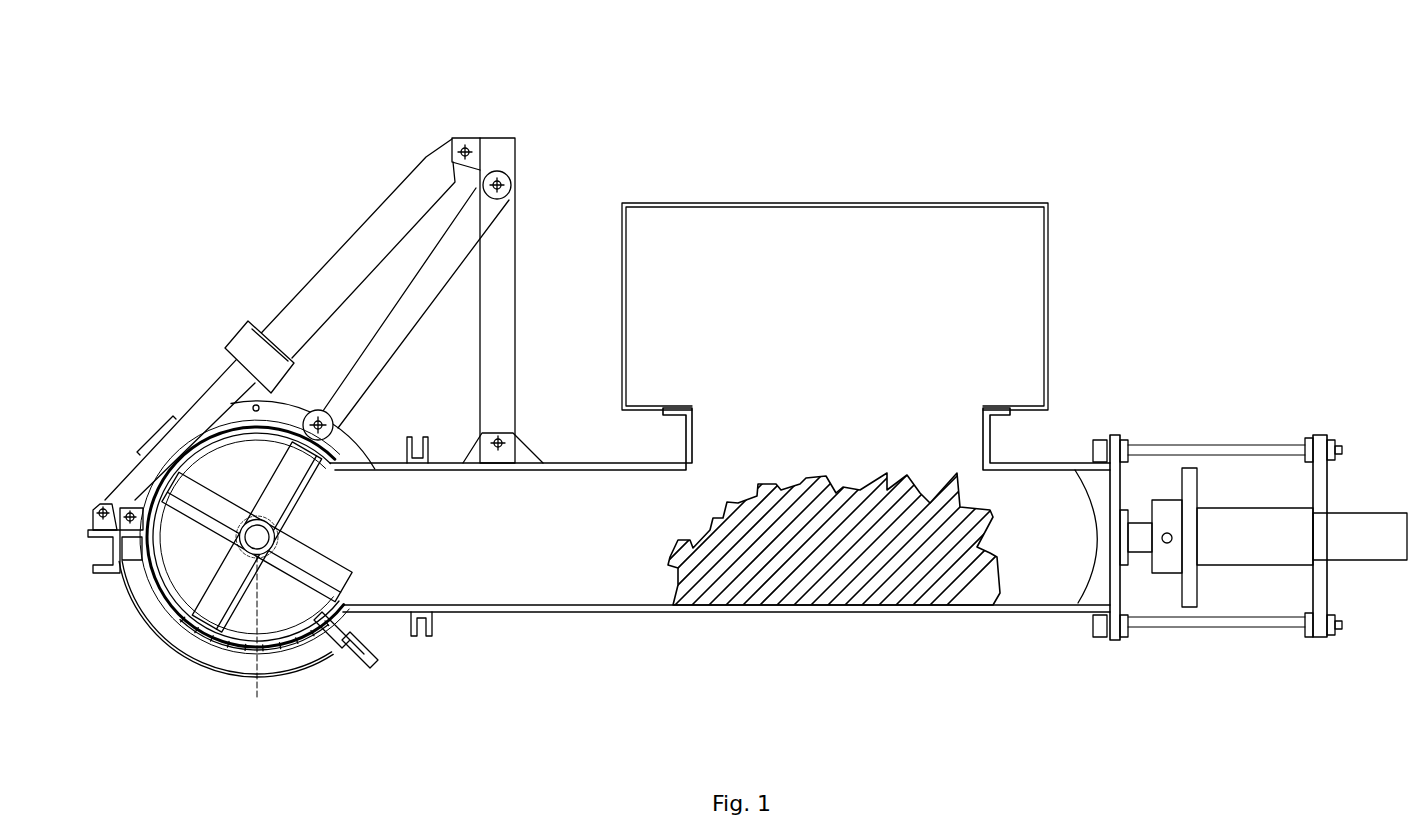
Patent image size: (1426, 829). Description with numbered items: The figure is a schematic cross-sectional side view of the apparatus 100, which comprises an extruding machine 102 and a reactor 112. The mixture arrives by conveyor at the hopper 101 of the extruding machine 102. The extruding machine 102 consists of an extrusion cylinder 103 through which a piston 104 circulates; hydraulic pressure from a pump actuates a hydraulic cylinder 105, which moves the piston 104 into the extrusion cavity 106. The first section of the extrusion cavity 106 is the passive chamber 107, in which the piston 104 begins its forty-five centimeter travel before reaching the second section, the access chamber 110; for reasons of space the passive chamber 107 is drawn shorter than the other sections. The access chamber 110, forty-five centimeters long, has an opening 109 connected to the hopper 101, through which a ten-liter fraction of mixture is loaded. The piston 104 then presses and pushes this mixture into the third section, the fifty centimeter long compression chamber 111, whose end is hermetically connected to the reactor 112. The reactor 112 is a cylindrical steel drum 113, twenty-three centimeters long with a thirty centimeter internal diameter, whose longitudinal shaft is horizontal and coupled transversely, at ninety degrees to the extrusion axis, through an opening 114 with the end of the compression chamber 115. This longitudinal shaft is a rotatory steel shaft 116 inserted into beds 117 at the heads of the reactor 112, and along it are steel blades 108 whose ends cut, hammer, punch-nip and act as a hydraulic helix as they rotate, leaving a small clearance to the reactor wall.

The apparatus 100 is at (620, 112).
The hopper 101 is at (1053, 346).
The extruding machine 102 is at (1069, 438).
The extrusion cylinder 103 is at (912, 614).
The piston 104 is at (1090, 572).
The hydraulic cylinder 105 is at (1138, 512).
The extrusion cavity 106 is at (625, 582).
The passive chamber 107 is at (1037, 545).
The steel blades 108 is at (187, 496).
The opening 109 is at (732, 442).
The access chamber 110 is at (820, 577).
The compression chamber 111 is at (455, 582).
The reactor 112 is at (118, 620).
The cylindrical steel drum 113 is at (334, 452).
The opening 114 is at (338, 498).
The end of the compression chamber 115 is at (355, 588).
The rotatory steel shaft 116 is at (250, 548).
The beds 117 is at (268, 556).